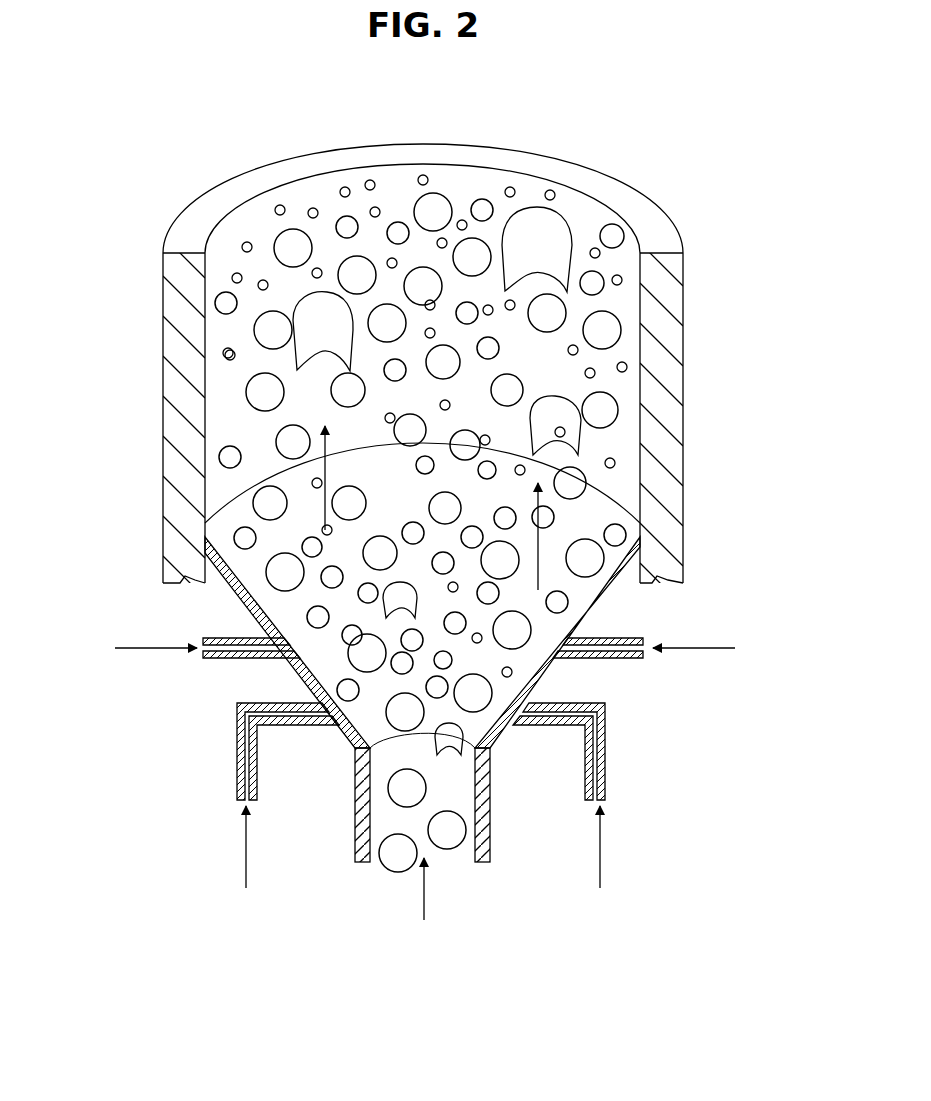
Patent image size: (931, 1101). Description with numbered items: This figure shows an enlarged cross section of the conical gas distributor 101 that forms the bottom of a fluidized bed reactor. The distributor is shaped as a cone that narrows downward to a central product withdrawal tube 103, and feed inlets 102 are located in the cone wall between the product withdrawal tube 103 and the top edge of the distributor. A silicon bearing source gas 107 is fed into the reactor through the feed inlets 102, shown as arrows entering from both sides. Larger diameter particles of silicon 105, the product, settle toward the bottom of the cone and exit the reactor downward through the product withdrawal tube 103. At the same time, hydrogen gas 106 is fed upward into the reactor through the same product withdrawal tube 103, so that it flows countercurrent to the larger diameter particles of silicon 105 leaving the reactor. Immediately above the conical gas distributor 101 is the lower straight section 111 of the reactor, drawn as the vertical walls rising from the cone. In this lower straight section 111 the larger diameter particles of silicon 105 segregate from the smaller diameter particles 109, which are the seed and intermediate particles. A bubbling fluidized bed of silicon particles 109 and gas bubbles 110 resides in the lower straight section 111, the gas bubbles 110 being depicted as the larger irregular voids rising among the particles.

The conical gas distributor 101 is at (323, 770).
The feed inlets 102 is at (224, 660).
The product withdrawal tube 103 is at (495, 847).
The larger diameter particles of silicon 105 is at (473, 703).
The hydrogen gas 106 is at (273, 472).
The silicon bearing source gas 107 is at (148, 647).
The smaller diameter particles 109 is at (560, 365).
The gas bubbles 110 is at (533, 227).
The lower straight section 111 is at (716, 279).